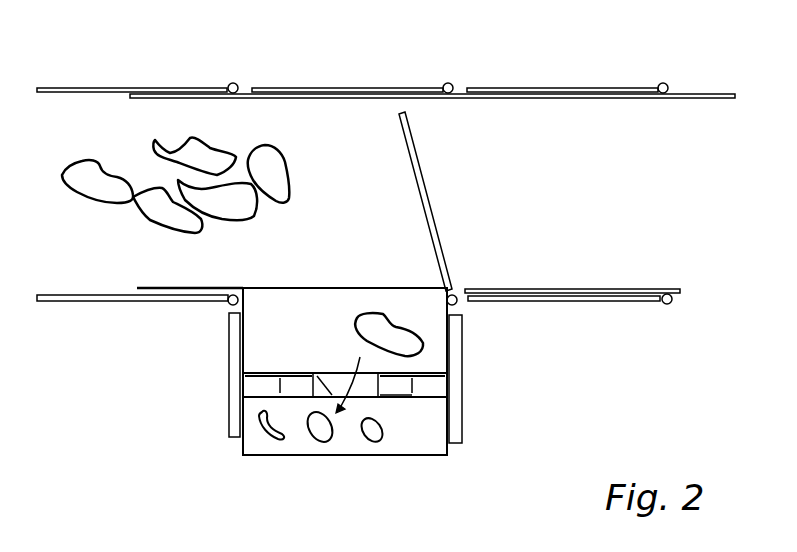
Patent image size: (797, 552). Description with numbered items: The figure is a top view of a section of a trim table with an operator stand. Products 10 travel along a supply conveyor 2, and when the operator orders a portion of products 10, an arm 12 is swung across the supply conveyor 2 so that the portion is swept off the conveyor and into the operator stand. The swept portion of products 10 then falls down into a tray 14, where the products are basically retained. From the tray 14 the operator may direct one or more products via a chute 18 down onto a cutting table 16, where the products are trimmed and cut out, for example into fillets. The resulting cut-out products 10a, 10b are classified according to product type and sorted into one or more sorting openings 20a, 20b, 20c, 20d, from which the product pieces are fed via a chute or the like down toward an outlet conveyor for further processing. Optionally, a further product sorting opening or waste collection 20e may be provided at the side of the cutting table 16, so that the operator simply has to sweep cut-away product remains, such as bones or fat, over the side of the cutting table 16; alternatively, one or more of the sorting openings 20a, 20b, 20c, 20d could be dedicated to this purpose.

The supply conveyor 2 is at (622, 138).
The products 10 is at (360, 331).
The cut-out product 10a is at (323, 432).
The cut-out product 10b is at (373, 432).
The arm 12 is at (403, 131).
The tray 14 is at (417, 318).
The cutting table 16 is at (285, 448).
The chute 18 is at (360, 377).
The sorting opening 20a is at (253, 383).
The sorting opening 20b is at (297, 387).
The sorting opening 20c is at (395, 392).
The sorting opening 20d is at (440, 383).
The waste collection 20e is at (230, 437).